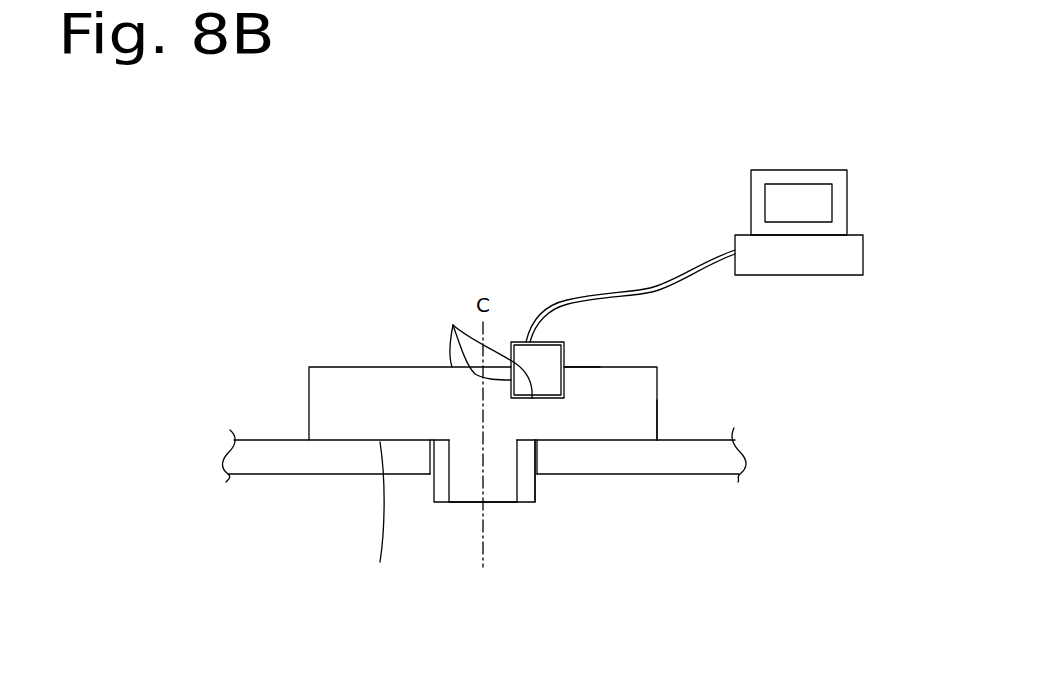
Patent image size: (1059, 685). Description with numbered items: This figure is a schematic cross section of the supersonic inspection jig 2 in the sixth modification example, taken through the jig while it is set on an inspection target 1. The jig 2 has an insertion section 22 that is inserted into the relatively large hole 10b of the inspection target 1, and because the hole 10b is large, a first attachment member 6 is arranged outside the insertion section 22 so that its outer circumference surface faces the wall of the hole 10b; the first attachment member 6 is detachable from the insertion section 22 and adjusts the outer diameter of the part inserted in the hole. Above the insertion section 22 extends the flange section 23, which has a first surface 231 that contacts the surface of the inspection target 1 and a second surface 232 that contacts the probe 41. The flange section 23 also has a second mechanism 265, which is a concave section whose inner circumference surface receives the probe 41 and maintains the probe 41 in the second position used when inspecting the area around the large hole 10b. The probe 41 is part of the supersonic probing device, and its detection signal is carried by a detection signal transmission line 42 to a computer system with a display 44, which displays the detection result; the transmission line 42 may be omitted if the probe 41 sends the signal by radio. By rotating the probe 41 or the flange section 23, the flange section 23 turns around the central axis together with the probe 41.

The inspection target 1 is at (688, 463).
The first attachment member 6 is at (433, 502).
The insertion section 22 is at (467, 503).
The hole 10b is at (534, 497).
The first surface 231 is at (377, 517).
The supersonic inspection jig 2 is at (648, 393).
The flange section 23 is at (650, 427).
The second mechanism 265 is at (565, 382).
The second surface 232 is at (481, 349).
The probe 41 is at (556, 355).
The detection signal transmission line 42 is at (676, 272).
The display 44 is at (803, 176).